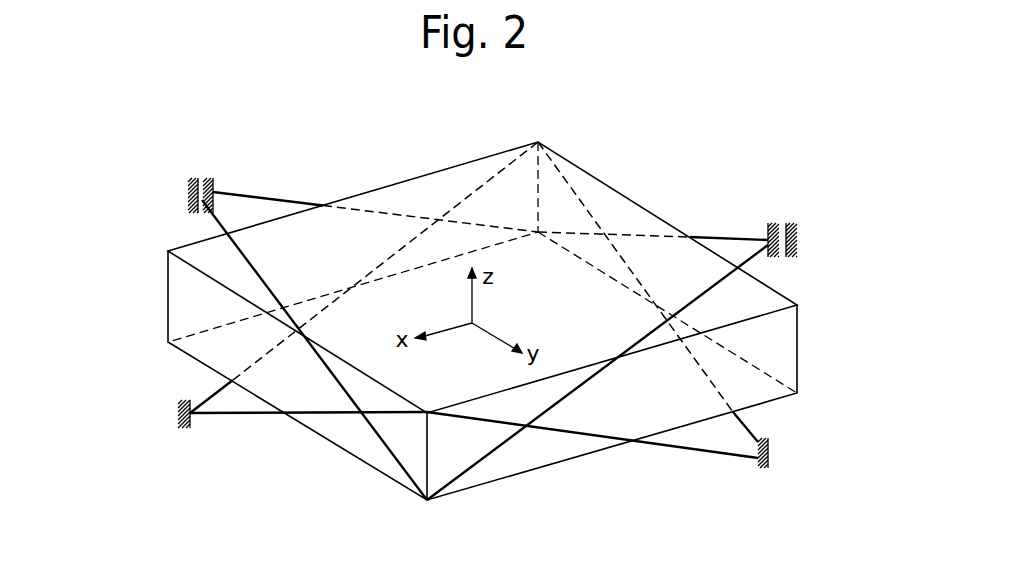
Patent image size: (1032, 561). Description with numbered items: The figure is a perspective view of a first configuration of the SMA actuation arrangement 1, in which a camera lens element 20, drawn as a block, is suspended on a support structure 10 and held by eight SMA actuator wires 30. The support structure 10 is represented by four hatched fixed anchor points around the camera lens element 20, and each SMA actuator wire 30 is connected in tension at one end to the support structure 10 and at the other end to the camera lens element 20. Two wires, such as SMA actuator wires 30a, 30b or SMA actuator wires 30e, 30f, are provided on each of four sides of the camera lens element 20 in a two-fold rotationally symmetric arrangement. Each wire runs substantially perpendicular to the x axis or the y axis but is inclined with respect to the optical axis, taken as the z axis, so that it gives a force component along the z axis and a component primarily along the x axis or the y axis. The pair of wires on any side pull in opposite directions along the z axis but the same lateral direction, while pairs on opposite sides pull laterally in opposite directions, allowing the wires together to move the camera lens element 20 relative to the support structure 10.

The SMA actuation arrangement 1 is at (140, 297).
The support structure 10 is at (188, 198).
The camera lens element 20 is at (655, 222).
The SMA actuator wire 30 is at (557, 166).
The SMA actuator wire 30a is at (706, 455).
The SMA actuator wire 30b is at (472, 475).
The SMA actuator wire 30e is at (276, 195).
The SMA actuator wire 30f is at (482, 187).